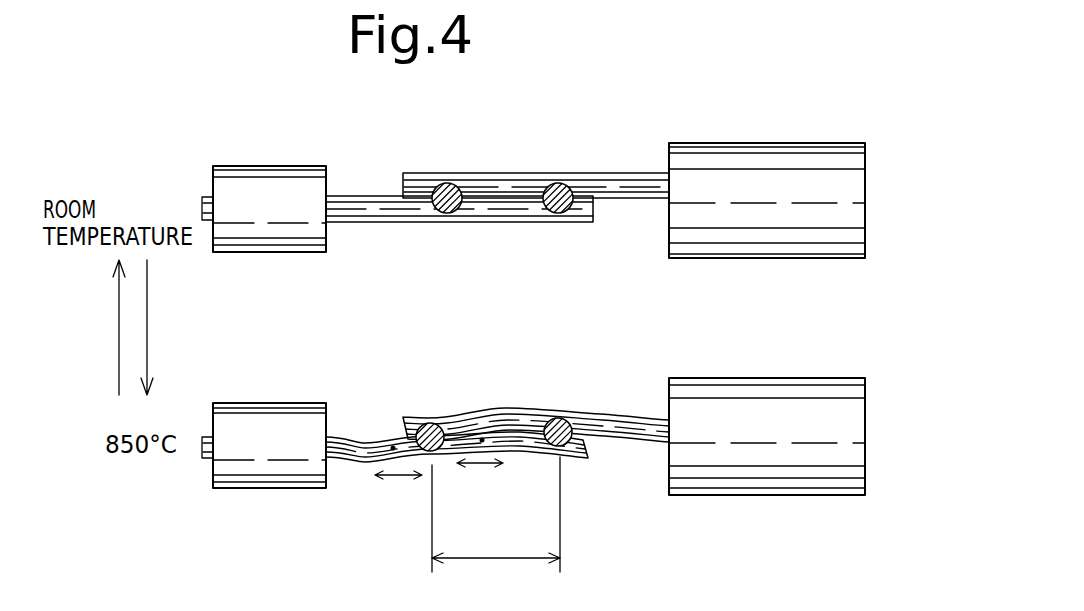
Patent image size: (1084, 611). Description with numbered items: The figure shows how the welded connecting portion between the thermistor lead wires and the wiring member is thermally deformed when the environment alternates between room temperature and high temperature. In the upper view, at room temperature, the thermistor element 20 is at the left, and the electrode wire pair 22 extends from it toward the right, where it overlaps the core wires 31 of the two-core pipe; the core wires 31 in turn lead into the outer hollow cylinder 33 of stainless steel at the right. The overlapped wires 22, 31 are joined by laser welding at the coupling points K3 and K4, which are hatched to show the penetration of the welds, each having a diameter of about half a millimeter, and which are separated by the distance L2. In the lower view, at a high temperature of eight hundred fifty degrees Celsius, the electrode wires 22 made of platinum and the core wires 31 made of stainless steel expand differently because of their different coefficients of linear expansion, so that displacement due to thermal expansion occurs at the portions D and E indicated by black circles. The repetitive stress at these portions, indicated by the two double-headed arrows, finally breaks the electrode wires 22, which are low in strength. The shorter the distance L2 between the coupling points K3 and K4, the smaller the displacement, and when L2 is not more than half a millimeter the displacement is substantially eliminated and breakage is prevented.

The thermistor element 20 is at (262, 183).
The electrode wire pair 22 is at (368, 200).
The core wires 31 is at (636, 183).
The outer hollow cylinder 33 is at (755, 160).
The coupling point K3 is at (447, 190).
The coupling point K4 is at (562, 186).
The portion D is at (388, 446).
The portion E is at (477, 441).
The distance between coupling points L2 is at (496, 514).